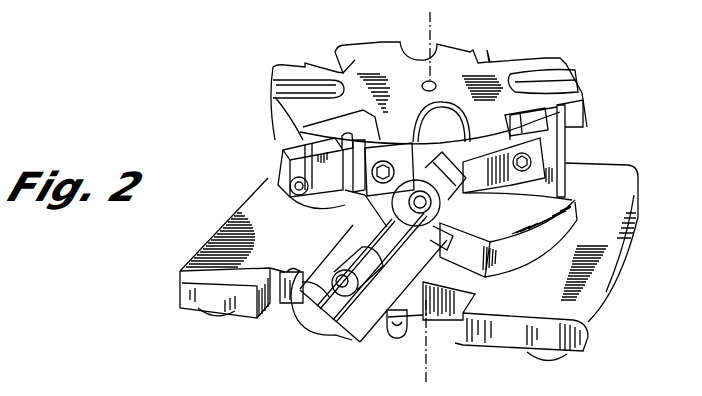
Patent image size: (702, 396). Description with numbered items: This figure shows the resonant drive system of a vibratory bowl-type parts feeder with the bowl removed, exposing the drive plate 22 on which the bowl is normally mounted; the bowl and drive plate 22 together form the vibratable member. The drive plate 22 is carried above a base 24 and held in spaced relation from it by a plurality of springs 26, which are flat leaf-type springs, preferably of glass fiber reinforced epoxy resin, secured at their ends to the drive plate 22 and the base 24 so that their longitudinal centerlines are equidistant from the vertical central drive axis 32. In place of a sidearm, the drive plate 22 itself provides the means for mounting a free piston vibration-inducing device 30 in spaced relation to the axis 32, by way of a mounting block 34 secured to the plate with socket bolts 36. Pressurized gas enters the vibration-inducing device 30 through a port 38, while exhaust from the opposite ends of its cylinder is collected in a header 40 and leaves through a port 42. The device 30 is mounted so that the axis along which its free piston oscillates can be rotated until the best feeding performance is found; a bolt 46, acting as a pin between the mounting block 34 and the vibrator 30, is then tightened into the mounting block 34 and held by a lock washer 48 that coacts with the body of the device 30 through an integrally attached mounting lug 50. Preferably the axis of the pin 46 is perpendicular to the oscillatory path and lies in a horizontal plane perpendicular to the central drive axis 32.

The drive plate 22 is at (557, 58).
The base 24 is at (409, 262).
The springs 26 is at (285, 162).
The free piston vibration-inducing device 30 is at (323, 322).
The axis 32 is at (433, 27).
The mounting block 34 is at (512, 177).
The socket bolts 36 is at (380, 157).
The port 38 is at (300, 303).
The header 40 is at (355, 345).
The port 42 is at (400, 338).
The bolt 46 is at (463, 250).
The lock washer 48 is at (420, 180).
The mounting lug 50 is at (453, 205).